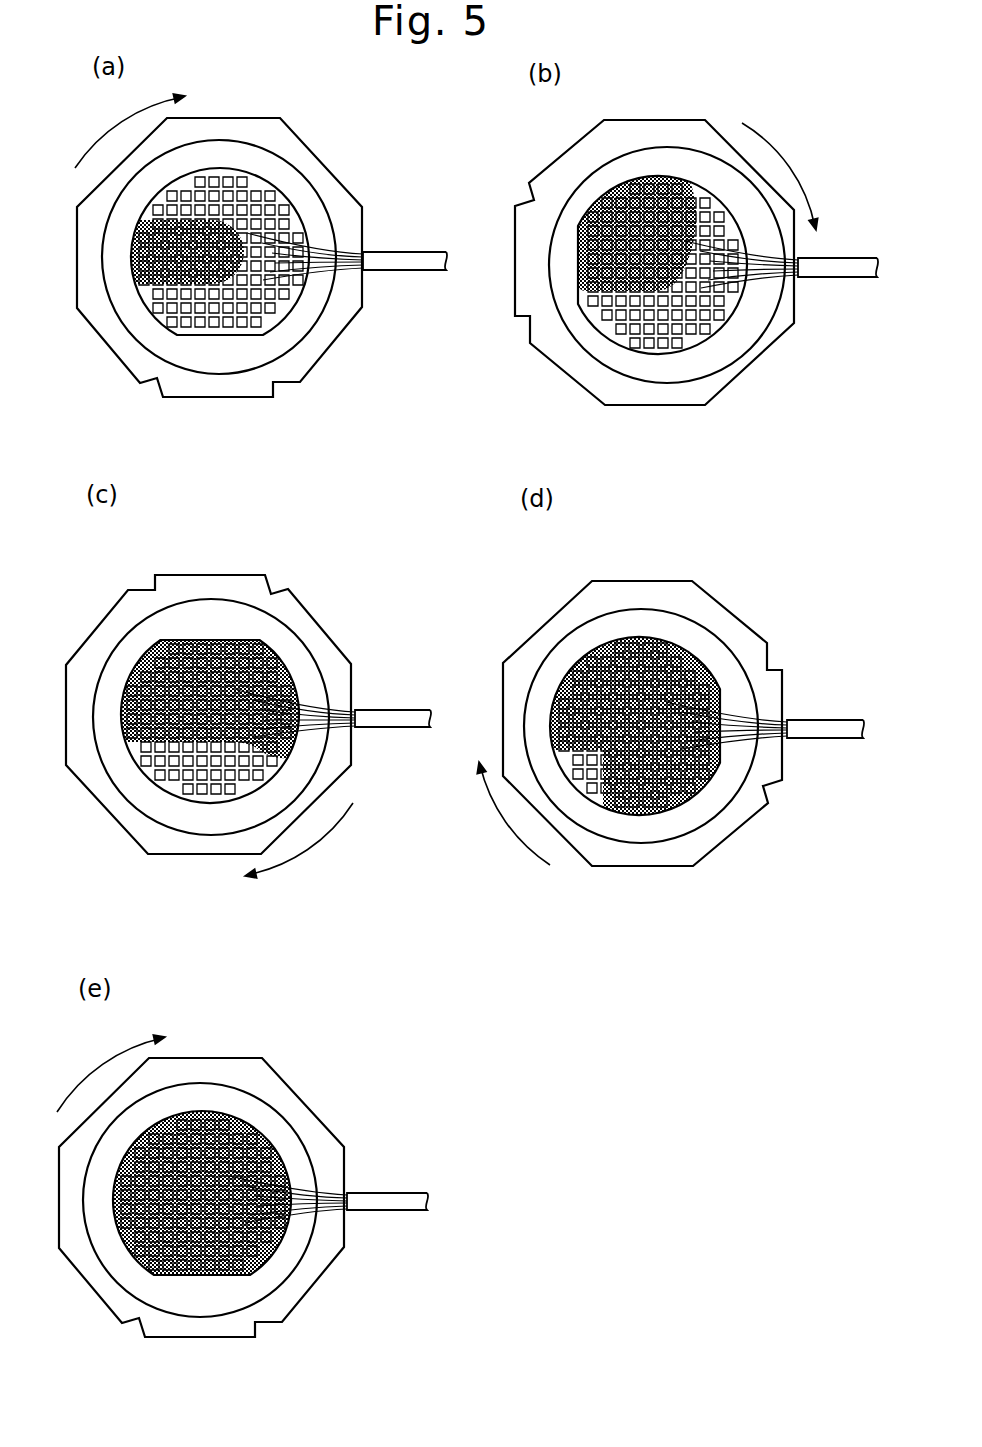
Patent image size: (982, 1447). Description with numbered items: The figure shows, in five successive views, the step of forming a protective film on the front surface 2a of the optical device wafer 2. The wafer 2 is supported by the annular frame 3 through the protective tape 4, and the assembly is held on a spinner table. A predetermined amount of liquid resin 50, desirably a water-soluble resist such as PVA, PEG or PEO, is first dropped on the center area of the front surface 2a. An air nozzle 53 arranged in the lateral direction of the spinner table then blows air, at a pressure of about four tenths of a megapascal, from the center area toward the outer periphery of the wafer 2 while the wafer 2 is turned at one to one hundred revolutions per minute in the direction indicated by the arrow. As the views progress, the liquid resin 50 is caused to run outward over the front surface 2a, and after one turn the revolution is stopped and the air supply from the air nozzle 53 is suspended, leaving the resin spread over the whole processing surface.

The optical device wafer 2 is at (305, 220).
The front surface 2a is at (257, 183).
The annular frame 3 is at (312, 165).
The protective tape 4 is at (293, 325).
The liquid resin 50 is at (140, 313).
The air nozzle 53 is at (405, 270).